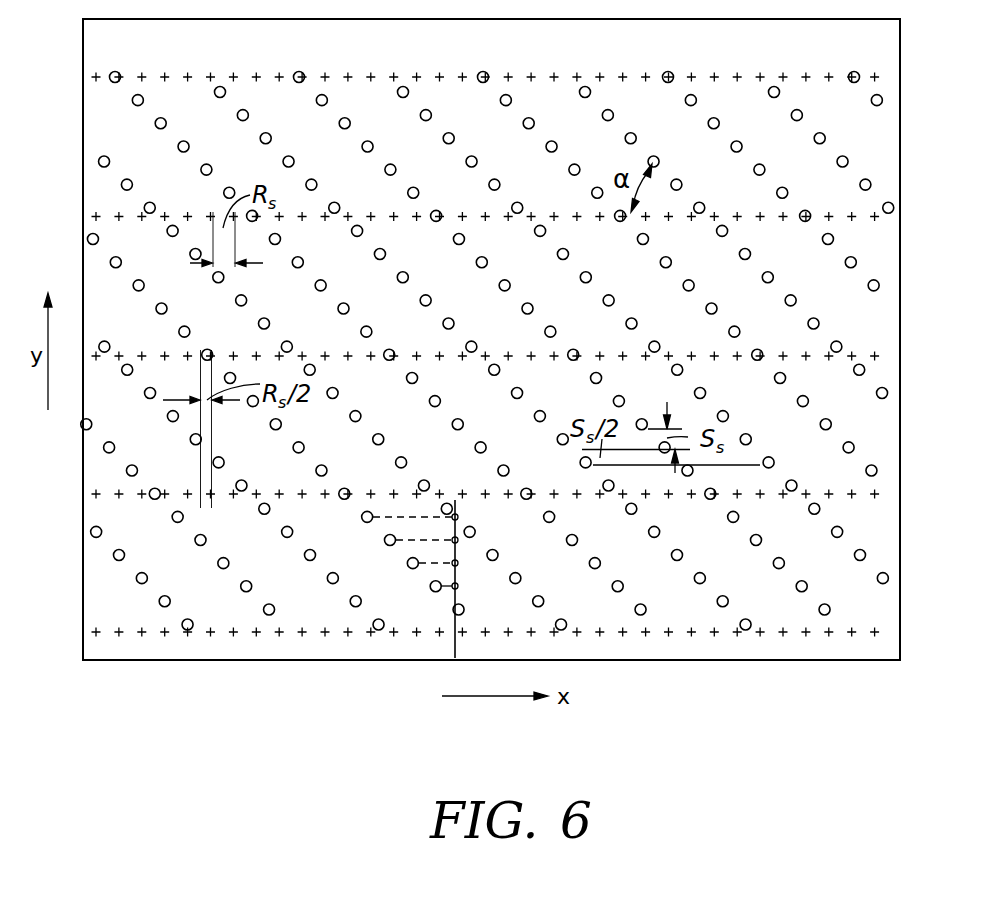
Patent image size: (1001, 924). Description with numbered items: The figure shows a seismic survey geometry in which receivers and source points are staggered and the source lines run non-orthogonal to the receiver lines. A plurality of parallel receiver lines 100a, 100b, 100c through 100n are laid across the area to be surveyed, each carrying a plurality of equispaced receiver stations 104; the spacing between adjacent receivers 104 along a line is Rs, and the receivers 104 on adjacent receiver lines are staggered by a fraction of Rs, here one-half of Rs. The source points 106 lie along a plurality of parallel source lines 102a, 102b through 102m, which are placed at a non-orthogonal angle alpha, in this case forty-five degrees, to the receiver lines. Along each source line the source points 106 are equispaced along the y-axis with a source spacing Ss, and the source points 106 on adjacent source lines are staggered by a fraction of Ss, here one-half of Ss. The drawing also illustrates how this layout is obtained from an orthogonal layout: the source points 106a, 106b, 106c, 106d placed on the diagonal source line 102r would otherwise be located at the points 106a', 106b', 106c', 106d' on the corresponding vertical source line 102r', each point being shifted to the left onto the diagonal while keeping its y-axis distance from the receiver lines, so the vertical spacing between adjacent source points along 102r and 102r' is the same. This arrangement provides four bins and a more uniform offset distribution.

The receiver line 100n is at (146, 76).
The receiver line 100c is at (119, 356).
The receiver line 100b is at (110, 494).
The receiver line 100a is at (123, 632).
The source line 102m is at (866, 92).
The diagonal source line 102r is at (336, 451).
The vertical source line 102r' is at (442, 479).
The source line 102a is at (181, 610).
The source line 102b is at (265, 596).
The receiver station 104 is at (413, 354).
The source point 106 is at (643, 419).
The source point 106a is at (405, 587).
The source point 106b is at (393, 563).
The source point 106c is at (382, 540).
The source point 106d is at (372, 517).
The source point position on vertical source line 106a' is at (494, 598).
The source point position on vertical source line 106b' is at (515, 562).
The source point position on vertical source line 106c' is at (503, 539).
The source point position on vertical source line 106d' is at (492, 514).